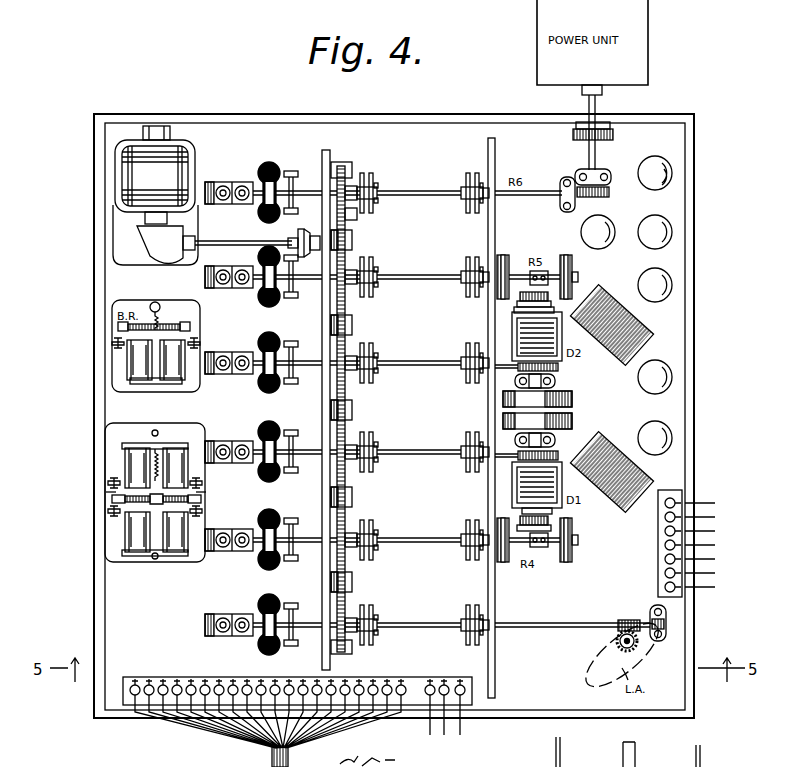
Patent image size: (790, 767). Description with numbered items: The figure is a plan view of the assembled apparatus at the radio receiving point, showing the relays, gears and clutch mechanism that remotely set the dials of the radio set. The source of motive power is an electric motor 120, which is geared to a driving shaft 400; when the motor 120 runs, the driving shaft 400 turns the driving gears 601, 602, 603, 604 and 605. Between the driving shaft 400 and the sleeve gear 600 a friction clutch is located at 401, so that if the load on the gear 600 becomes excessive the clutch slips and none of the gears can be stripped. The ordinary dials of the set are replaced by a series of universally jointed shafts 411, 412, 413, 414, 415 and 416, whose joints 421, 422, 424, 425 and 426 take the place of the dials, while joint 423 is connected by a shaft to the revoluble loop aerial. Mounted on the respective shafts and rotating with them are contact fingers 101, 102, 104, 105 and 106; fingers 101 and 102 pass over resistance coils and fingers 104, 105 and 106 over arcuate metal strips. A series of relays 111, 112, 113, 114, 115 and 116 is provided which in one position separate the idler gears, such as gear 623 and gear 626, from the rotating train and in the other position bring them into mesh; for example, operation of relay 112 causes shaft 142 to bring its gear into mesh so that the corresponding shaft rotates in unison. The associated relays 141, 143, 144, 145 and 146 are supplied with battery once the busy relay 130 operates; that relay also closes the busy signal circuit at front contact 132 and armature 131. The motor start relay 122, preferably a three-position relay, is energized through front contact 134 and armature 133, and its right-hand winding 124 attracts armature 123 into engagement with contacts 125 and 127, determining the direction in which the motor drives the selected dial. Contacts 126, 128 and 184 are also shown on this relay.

The electric motor 120 is at (124, 167).
The relay 116 is at (258, 172).
The relay 115 is at (258, 258).
The relay 112 is at (258, 344).
The relay 111 is at (258, 436).
The relay 114 is at (258, 521).
The relay 113 is at (258, 607).
The relay 146 is at (303, 172).
The relay 145 is at (304, 276).
The shaft 142 is at (306, 357).
The relay 141 is at (306, 447).
The relay 144 is at (306, 533).
The relay 143 is at (306, 619).
The shaft 416 is at (416, 189).
The shaft 415 is at (416, 273).
The shaft 412 is at (416, 359).
The shaft 411 is at (416, 448).
The shaft 414 is at (416, 537).
The shaft 413 is at (416, 622).
The universal joint 426 is at (470, 173).
The universal joint 425 is at (470, 258).
The universal joint 422 is at (470, 344).
The universal joint 421 is at (470, 432).
The universal joint 424 is at (470, 520).
The universal joint 423 is at (470, 606).
The gear 626 is at (342, 168).
The sleeve gear 600 is at (352, 249).
The driving gear 605 is at (348, 218).
The driving gear 604 is at (350, 312).
The driving gear 603 is at (350, 397).
The driving gear 602 is at (350, 482).
The driving gear 601 is at (350, 567).
The gear 623 is at (344, 652).
The driving shaft 400 is at (272, 240).
The friction clutch location 401 is at (302, 227).
The contact finger 106 is at (576, 137).
The contact finger 102 is at (524, 292).
The contact finger 105 is at (578, 274).
The contact finger 101 is at (535, 534).
The contact finger 104 is at (578, 539).
The busy relay 130 is at (162, 309).
The armature 131 is at (118, 326).
The front contact 132 is at (113, 345).
The armature 133 is at (190, 325).
The front contact 134 is at (198, 342).
The motor start relay 122 is at (159, 434).
The armature 123 is at (112, 502).
The motor start relay winding 124 is at (112, 482).
The contact 184 is at (108, 491).
The contact 125 is at (110, 512).
The contact 126 is at (202, 484).
The contact 128 is at (204, 494).
The contact 127 is at (202, 510).